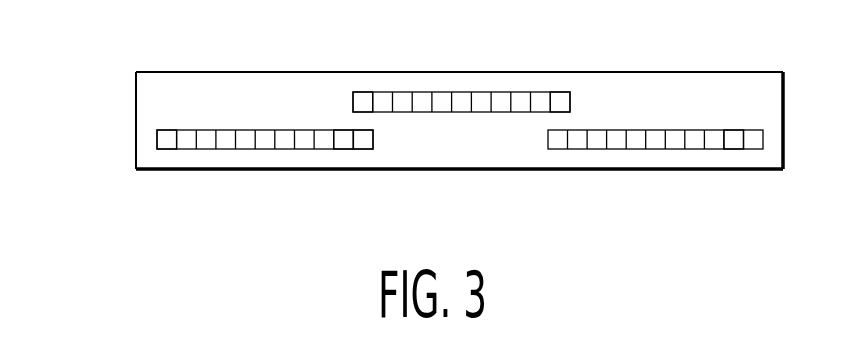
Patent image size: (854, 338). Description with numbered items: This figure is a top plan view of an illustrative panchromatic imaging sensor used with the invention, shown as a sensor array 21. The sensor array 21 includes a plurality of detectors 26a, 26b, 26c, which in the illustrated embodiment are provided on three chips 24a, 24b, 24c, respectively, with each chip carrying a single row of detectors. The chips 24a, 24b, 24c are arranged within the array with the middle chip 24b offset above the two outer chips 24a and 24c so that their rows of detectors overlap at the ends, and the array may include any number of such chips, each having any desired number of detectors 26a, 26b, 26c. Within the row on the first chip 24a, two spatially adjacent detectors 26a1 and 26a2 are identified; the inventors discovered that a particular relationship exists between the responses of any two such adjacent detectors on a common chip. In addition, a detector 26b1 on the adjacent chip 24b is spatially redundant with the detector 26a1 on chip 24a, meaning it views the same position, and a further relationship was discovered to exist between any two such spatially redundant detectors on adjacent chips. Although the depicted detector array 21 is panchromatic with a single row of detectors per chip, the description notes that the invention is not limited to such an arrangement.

The sensor array 21 is at (704, 69).
The chip 24a is at (251, 156).
The chip 24b is at (482, 85).
The chip 24c is at (613, 156).
The detectors 26a is at (166, 139).
The detector 26a1 is at (364, 143).
The detector 26a2 is at (344, 143).
The detectors 26b is at (558, 97).
The detector 26b1 is at (363, 97).
The detectors 26c is at (733, 143).